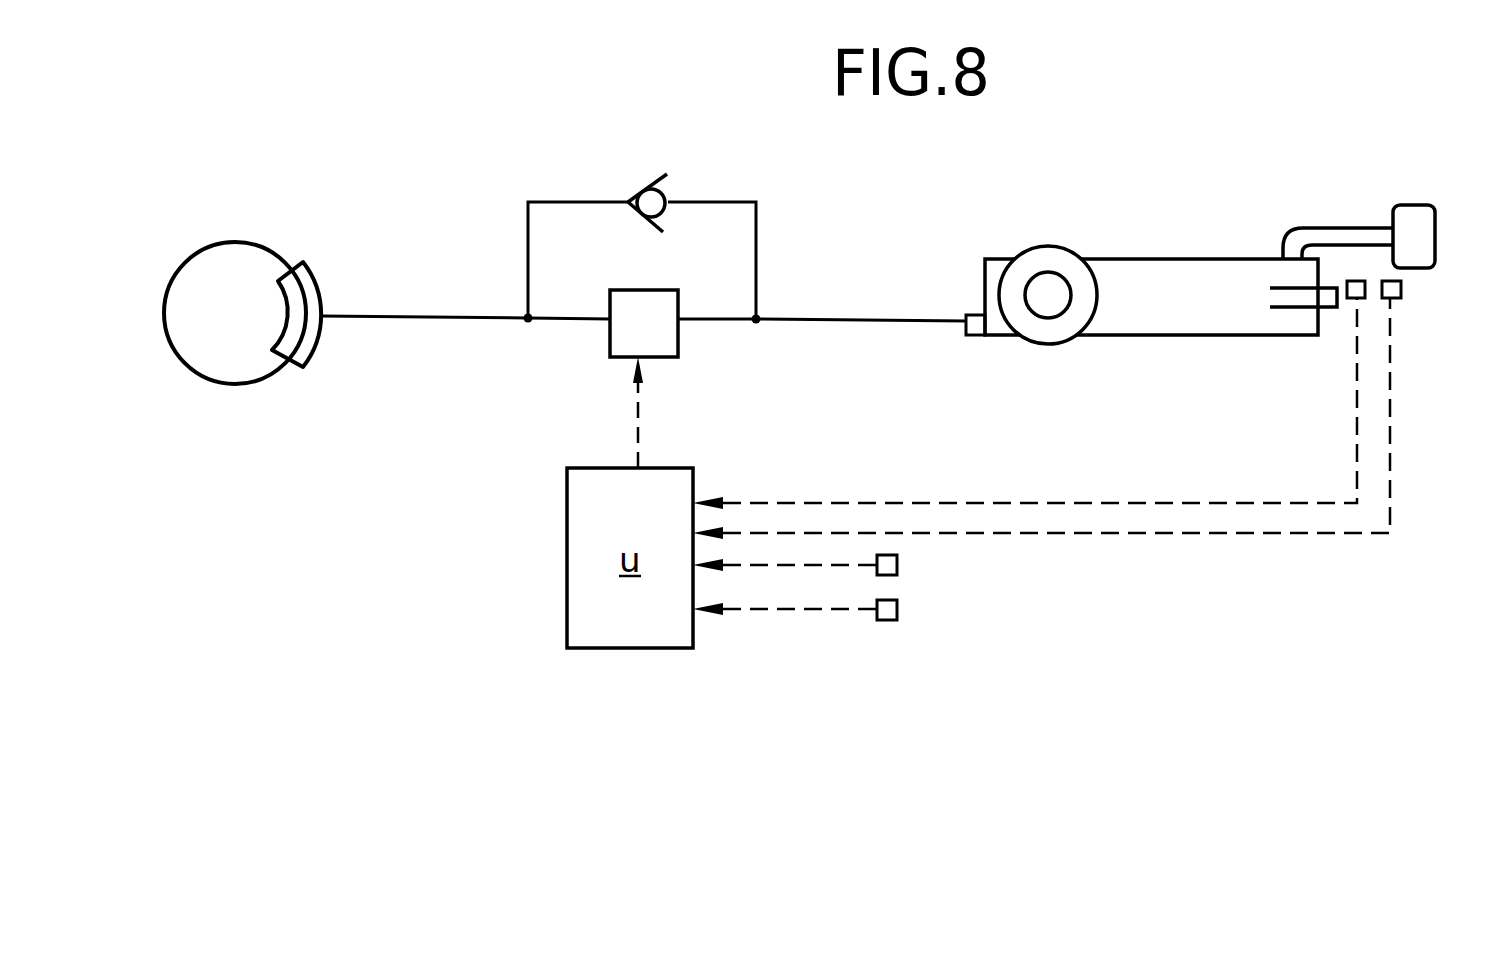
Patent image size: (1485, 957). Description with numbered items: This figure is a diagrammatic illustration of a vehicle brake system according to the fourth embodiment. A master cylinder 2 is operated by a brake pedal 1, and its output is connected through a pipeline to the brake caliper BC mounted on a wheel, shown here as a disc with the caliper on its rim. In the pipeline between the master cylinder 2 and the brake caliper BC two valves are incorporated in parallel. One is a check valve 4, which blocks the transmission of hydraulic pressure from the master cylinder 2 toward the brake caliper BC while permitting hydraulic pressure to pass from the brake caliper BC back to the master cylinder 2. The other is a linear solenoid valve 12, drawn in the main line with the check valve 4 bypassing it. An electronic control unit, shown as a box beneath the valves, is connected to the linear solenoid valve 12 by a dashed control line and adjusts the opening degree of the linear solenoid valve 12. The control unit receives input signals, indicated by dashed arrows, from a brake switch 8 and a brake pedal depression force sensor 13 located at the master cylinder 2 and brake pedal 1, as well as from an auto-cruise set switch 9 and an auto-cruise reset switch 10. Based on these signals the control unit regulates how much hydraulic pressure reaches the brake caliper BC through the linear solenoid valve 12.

The brake caliper BC is at (300, 288).
The check valve 4 is at (663, 190).
The linear solenoid valve 12 is at (618, 340).
The master cylinder 2 is at (1181, 277).
The brake pedal 1 is at (1420, 230).
The brake switch 8 is at (1355, 300).
The brake pedal depression force sensor 13 is at (1400, 300).
The auto-cruise set switch 9 is at (897, 568).
The auto-cruise reset switch 10 is at (897, 612).